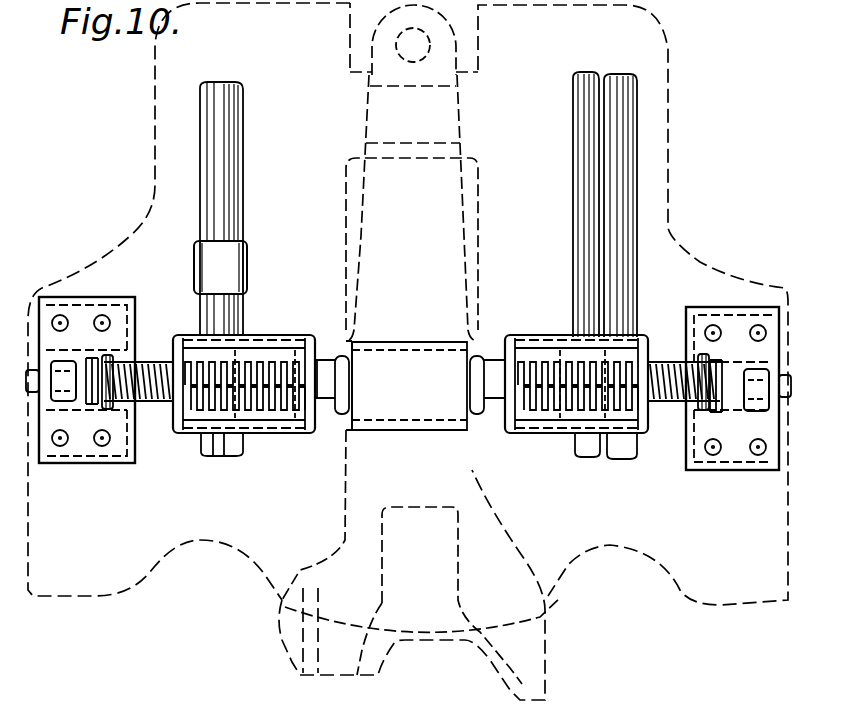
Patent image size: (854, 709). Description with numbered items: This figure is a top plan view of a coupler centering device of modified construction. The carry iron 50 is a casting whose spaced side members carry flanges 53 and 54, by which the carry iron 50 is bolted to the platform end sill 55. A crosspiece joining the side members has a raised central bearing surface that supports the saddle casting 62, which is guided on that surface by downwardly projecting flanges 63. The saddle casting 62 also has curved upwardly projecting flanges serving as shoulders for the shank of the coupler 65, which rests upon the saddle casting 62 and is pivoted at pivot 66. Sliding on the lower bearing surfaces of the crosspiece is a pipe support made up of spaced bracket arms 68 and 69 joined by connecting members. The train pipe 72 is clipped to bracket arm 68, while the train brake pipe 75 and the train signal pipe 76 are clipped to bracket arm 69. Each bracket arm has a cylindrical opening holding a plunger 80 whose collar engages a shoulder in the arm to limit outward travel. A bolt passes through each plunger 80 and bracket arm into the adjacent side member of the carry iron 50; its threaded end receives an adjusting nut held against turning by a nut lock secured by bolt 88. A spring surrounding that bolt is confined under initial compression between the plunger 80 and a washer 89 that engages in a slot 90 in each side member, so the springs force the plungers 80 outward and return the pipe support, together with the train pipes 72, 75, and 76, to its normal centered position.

The carry iron 50 is at (328, 425).
The flange 53 is at (742, 470).
The flange 54 is at (85, 450).
The platform end sill 55 is at (97, 578).
The saddle casting 62 is at (343, 435).
The downwardly projecting flanges 63 is at (410, 430).
The coupler 65 is at (475, 495).
The pivot 66 is at (400, 50).
The bracket arm 68 is at (262, 433).
The bracket arm 69 is at (566, 445).
The train pipe 72 is at (218, 190).
The train brake pipe 75 is at (622, 236).
The train signal pipe 76 is at (586, 222).
The plunger 80 is at (340, 372).
The bolt 88 is at (782, 402).
The washer 89 is at (110, 356).
The slot 90 is at (112, 358).